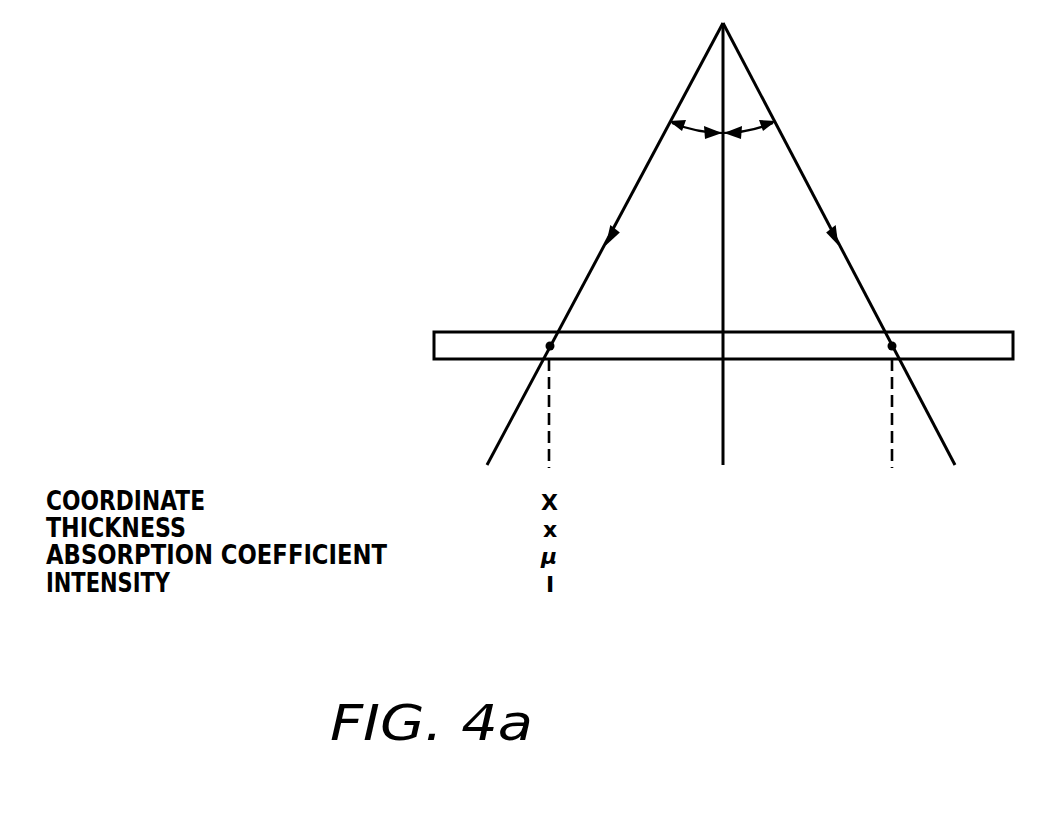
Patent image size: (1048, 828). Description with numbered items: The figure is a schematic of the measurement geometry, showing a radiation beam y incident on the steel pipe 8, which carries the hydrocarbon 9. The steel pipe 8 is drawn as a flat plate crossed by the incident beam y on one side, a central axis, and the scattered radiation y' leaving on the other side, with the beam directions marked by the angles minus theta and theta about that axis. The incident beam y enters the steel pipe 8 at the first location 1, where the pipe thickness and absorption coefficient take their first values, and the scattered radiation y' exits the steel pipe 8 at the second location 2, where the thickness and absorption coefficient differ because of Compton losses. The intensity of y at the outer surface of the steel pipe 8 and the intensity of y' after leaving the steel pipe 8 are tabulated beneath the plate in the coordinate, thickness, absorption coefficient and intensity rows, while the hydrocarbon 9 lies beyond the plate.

The steel pipe 8 is at (483, 332).
The hydrocarbon 9 is at (553, 119).
The central ray position X1 1 is at (727, 311).
The ray position X2 2 is at (897, 471).